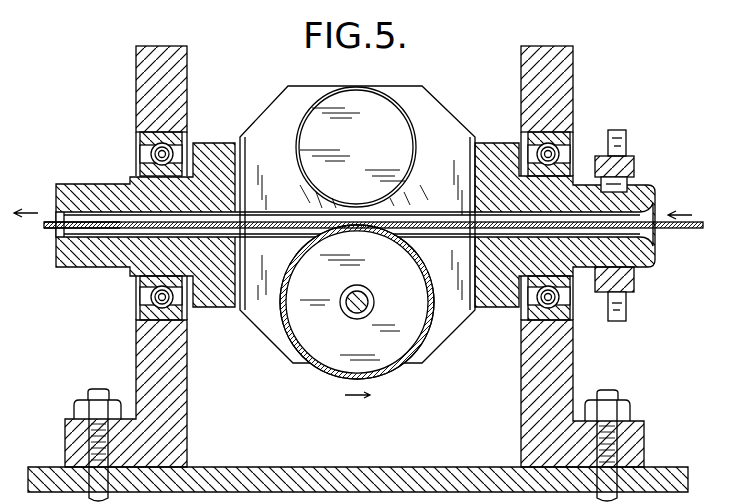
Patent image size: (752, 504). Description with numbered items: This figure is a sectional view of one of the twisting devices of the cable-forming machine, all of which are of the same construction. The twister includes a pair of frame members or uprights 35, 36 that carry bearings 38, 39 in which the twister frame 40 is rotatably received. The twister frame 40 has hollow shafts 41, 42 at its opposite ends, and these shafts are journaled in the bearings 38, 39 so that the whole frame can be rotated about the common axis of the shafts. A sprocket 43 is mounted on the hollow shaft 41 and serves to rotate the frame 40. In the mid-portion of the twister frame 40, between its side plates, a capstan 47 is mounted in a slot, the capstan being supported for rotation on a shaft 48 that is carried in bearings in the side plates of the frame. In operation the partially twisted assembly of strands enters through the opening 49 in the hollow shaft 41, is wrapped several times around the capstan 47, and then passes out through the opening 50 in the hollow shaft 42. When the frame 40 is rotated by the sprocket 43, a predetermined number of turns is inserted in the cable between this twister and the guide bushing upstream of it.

The upright 35 is at (146, 65).
The upright 36 is at (563, 69).
The bearing 38 is at (553, 143).
The bearing 39 is at (168, 150).
The twister frame 40 is at (443, 118).
The hollow shaft 41 is at (648, 188).
The hollow shaft 42 is at (95, 184).
The sprocket 43 is at (626, 143).
The capstan 47 is at (325, 355).
The shaft 48 is at (350, 298).
The opening 49 is at (654, 217).
The opening 50 is at (67, 231).